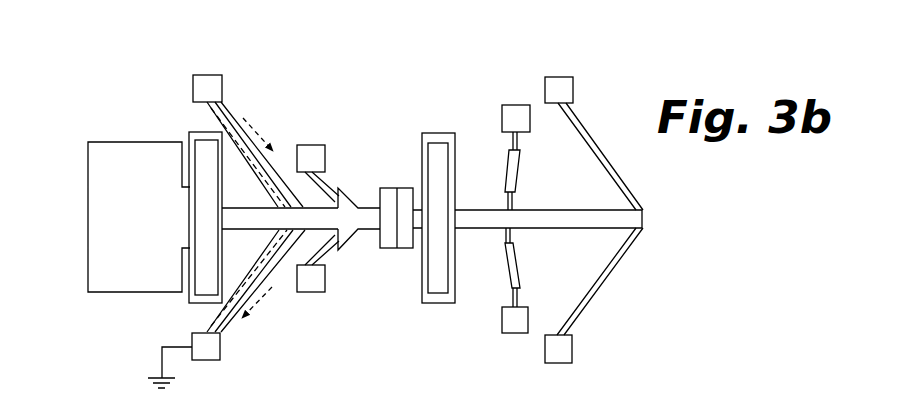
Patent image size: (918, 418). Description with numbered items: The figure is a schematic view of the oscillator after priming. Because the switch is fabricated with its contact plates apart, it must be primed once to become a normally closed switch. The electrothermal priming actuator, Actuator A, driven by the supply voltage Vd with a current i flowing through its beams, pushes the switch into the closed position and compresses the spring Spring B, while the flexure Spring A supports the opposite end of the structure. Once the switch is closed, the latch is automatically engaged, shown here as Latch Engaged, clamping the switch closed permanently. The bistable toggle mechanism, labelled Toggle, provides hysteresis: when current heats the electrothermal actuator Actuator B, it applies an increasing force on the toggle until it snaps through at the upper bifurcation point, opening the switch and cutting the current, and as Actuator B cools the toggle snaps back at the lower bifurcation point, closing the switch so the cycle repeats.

The drive voltage Vd is at (193, 88).
The spring A Spring A is at (191, 309).
The priming actuator A Actuator A is at (226, 329).
The current i is at (257, 217).
The latch Latch Engaged is at (345, 173).
The spring B Spring B is at (438, 133).
The bistable toggle mechanism Toggle is at (520, 192).
The actuator B Actuator B is at (561, 321).